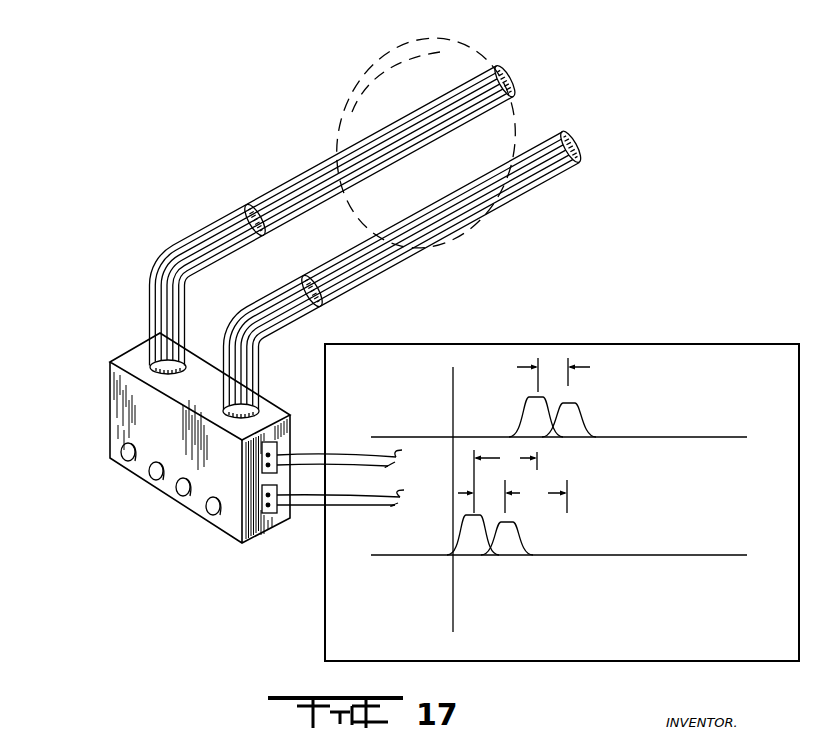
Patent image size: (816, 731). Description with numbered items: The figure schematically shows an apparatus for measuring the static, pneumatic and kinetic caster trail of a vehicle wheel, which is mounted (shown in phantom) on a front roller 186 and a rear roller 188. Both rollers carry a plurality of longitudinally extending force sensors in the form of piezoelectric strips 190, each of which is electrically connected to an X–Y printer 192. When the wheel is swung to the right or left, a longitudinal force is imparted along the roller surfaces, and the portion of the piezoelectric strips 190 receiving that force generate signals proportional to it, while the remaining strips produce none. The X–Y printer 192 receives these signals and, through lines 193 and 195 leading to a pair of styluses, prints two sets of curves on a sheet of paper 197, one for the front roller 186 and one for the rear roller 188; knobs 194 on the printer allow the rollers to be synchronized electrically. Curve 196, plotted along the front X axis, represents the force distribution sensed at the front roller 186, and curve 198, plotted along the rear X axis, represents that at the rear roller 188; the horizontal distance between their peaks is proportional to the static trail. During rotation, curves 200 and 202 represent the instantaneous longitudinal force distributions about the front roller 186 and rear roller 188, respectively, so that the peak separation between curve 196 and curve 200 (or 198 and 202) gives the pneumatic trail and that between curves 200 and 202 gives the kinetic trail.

The front roller 186 is at (519, 70).
The rear roller 188 is at (587, 140).
The piezoelectric strips 190 is at (286, 193).
The X–Y printer 192 is at (104, 401).
The line 193 is at (358, 461).
The knobs 194 is at (119, 457).
The line 195 is at (359, 498).
The curve 196 is at (523, 418).
The sheet of paper 197 is at (324, 608).
The curve 198 is at (460, 534).
The curve 200 is at (580, 418).
The curve 202 is at (517, 539).